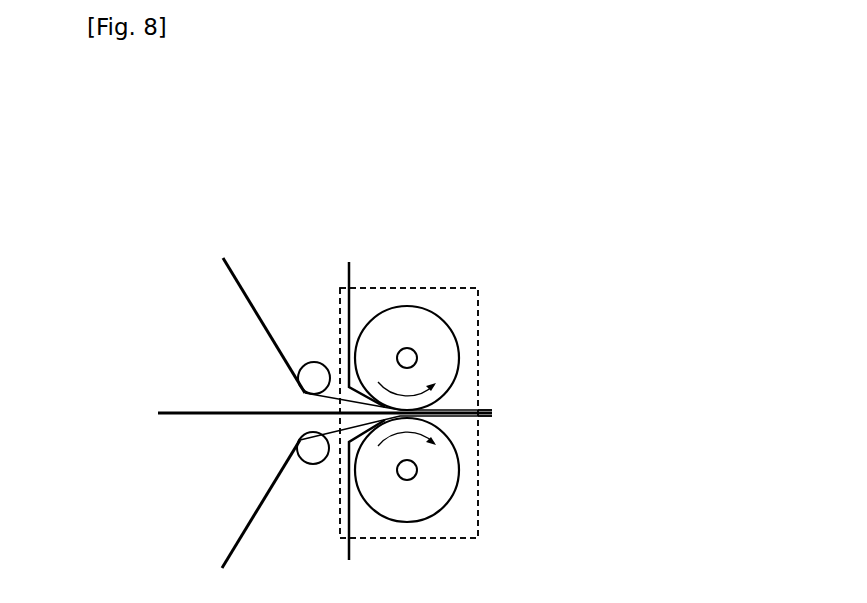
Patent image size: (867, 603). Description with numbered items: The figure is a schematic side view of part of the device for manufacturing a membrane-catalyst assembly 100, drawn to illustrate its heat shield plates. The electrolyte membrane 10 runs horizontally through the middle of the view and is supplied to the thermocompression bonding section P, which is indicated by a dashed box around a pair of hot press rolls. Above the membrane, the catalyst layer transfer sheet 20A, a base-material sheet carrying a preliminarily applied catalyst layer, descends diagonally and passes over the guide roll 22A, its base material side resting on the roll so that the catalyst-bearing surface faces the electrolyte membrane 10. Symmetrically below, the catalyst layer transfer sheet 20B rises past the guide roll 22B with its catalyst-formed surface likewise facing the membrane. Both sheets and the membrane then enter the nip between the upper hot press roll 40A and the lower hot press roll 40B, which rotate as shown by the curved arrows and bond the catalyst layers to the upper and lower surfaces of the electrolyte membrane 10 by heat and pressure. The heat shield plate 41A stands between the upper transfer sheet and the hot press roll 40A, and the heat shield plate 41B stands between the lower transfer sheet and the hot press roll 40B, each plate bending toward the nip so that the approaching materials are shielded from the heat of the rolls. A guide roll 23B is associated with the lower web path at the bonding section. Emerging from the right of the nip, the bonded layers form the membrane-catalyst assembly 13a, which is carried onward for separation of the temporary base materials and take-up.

The device for manufacturing membrane-catalyst assembly 100 is at (556, 130).
The electrolyte membrane 10 is at (187, 412).
The catalyst layer transfer sheet 20A is at (257, 318).
The catalyst layer transfer sheet 20B is at (255, 510).
The guide roll 22A is at (315, 362).
The guide roll 22B is at (315, 465).
The heat shield plate 41A is at (348, 268).
The heat shield plate 41B is at (348, 557).
The hot press roll 40A is at (405, 305).
The hot press roll 40B is at (403, 522).
The guide roll 23B is at (438, 413).
The thermocompression bonding section P is at (447, 286).
The membrane-catalyst assembly 13a is at (487, 407).